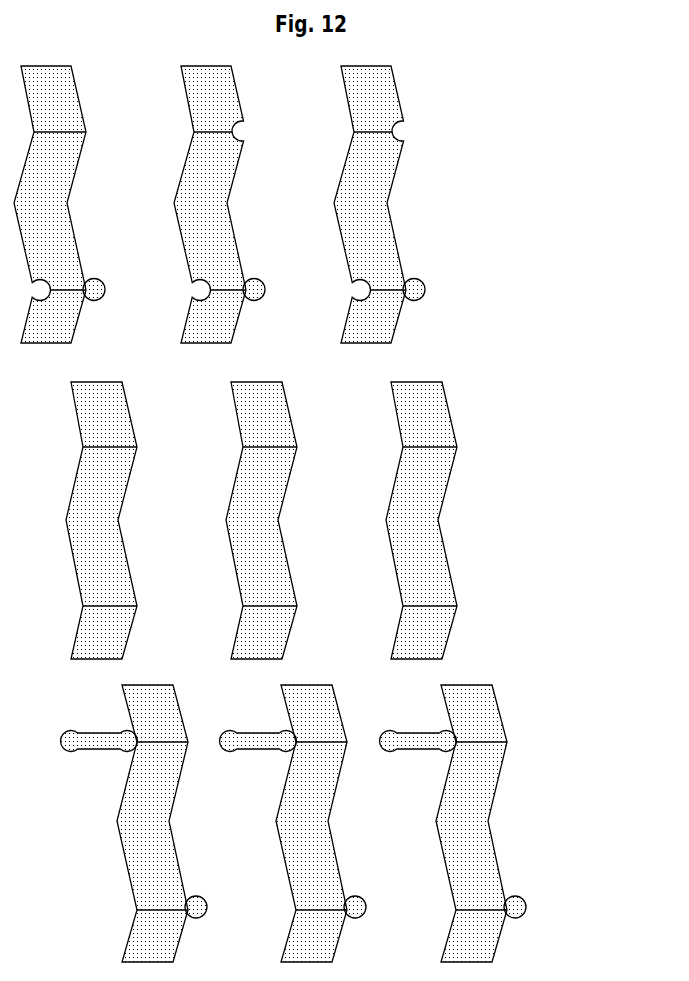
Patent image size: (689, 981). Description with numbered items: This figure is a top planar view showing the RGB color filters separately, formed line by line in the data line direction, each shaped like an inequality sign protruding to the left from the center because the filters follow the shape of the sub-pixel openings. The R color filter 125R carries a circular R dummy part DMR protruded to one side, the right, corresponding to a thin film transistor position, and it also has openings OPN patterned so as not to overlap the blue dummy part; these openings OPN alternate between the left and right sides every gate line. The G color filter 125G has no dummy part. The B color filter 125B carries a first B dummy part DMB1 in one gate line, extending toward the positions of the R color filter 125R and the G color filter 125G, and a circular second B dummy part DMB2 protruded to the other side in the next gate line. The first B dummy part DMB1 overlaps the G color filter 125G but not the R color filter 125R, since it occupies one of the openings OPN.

The R color filter 125R is at (385, 222).
The opening OPN is at (398, 130).
The R dummy part DMR is at (413, 289).
The G color filter 125G is at (432, 495).
The B color filter 125B is at (488, 795).
The 1B dummy part DMB1 is at (391, 736).
The 2B dummy part DMB2 is at (526, 905).